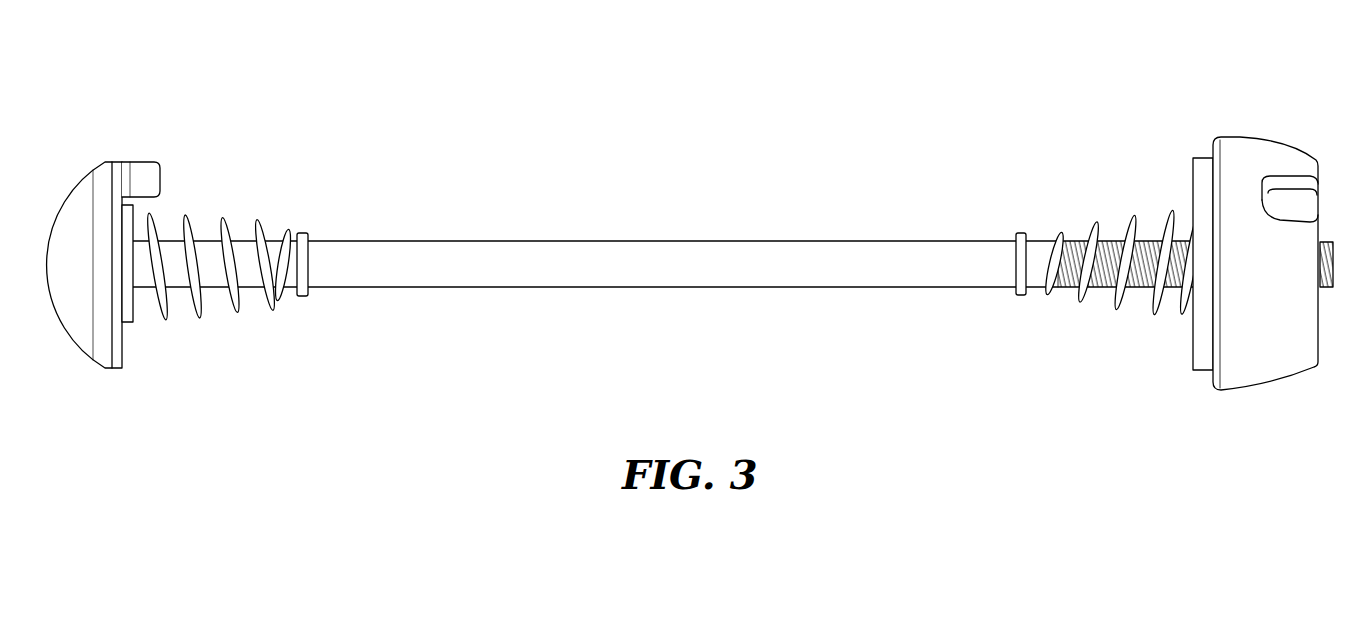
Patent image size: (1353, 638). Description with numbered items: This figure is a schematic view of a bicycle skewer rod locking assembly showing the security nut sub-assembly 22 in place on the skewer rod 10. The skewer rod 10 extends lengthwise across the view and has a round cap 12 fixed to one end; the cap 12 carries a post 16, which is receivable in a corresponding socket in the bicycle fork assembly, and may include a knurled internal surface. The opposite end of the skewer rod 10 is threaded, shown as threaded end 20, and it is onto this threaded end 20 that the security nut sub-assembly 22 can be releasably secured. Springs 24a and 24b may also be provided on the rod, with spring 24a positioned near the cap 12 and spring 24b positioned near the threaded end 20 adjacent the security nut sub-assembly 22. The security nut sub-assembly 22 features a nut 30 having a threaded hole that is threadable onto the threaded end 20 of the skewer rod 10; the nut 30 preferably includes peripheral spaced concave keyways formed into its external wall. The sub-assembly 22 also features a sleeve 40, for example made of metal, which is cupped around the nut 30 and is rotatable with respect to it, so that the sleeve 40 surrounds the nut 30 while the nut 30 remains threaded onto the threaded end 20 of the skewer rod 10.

The skewer rod 10 is at (455, 253).
The round cap 12 is at (95, 136).
The post 16 is at (145, 168).
The threaded end 20 is at (1103, 273).
The security nut sub-assembly 22 is at (1265, 254).
The spring 24a is at (253, 227).
The spring 24b is at (1068, 230).
The nut 30 is at (1318, 212).
The sleeve 40 is at (1268, 350).